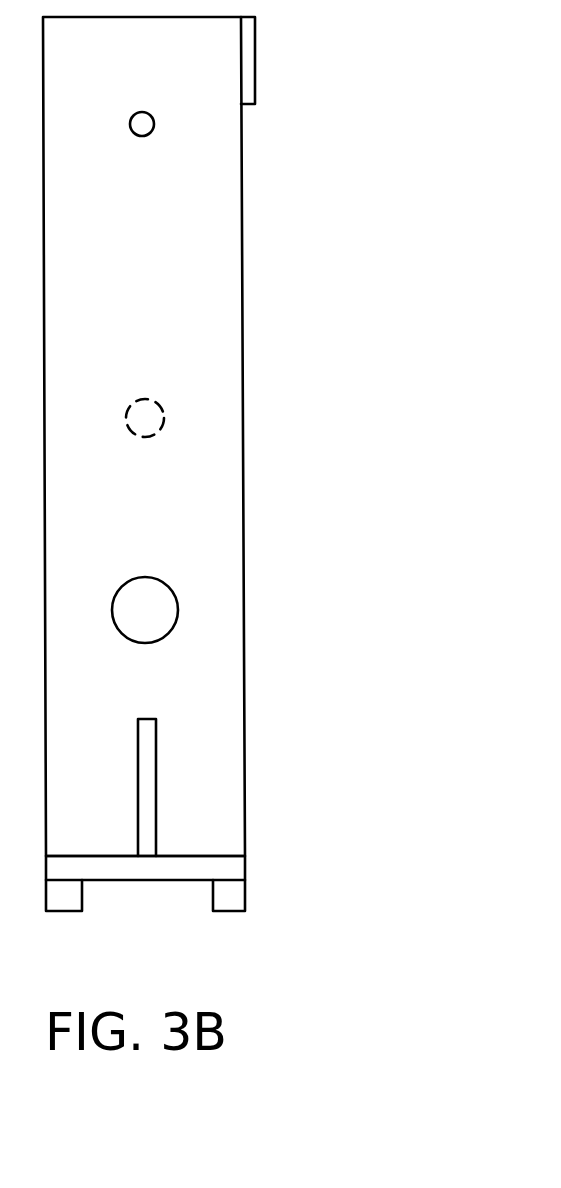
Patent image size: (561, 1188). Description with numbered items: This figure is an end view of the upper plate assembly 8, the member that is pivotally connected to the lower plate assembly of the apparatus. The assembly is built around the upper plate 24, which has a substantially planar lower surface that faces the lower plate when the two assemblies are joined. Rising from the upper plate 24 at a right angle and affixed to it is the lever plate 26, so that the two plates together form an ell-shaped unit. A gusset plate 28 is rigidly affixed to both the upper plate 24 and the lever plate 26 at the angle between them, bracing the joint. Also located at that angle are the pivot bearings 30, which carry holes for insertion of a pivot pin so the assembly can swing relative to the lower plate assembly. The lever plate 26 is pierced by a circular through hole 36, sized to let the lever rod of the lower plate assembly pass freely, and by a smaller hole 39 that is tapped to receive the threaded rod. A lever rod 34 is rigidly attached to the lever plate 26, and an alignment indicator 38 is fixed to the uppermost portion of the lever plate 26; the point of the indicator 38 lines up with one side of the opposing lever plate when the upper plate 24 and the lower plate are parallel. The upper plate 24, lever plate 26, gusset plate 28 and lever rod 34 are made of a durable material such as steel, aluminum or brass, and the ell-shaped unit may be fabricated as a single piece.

The upper plate assembly 8 is at (282, 345).
The upper plate 24 is at (237, 866).
The lever plate 26 is at (242, 272).
The gusset plate 28 is at (148, 770).
The pivot bearings 30 is at (245, 890).
The lever rod 34 is at (160, 413).
The circular through hole 36 is at (170, 612).
The alignment indicator 38 is at (258, 50).
The tapped hole 39 is at (155, 121).